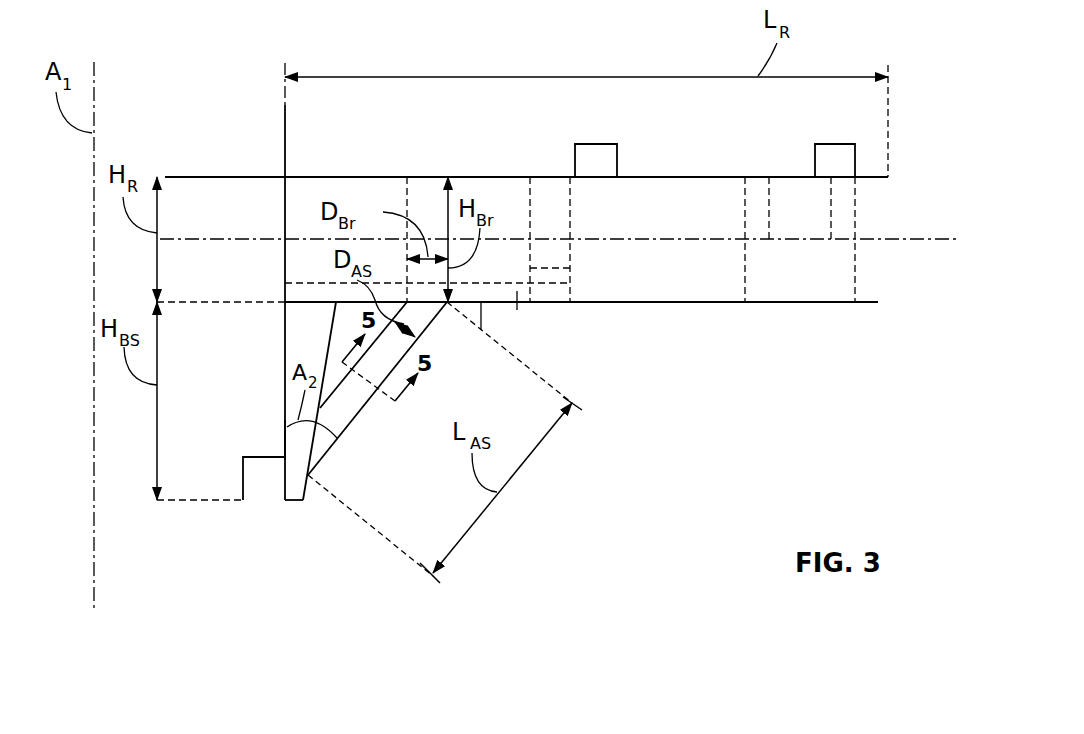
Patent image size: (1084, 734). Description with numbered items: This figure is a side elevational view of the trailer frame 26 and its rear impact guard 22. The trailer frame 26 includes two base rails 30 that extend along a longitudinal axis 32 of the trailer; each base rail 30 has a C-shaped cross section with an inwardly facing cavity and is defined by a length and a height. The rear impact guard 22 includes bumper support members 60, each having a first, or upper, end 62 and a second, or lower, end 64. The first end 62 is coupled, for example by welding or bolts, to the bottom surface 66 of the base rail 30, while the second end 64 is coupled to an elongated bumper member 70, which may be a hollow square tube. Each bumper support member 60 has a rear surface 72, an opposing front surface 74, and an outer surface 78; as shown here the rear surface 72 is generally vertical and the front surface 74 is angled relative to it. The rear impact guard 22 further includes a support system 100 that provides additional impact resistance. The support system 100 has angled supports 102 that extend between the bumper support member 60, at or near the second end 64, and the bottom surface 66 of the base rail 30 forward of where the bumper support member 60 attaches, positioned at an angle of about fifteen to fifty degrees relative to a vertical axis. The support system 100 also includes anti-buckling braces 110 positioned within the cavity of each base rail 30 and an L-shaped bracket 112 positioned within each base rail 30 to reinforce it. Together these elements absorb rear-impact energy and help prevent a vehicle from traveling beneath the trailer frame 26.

The rear impact guard 22 is at (244, 329).
The trailer frame 26 is at (637, 352).
The base rail 30 is at (347, 176).
The longitudinal axis 32 is at (950, 239).
The bumper support member 60 is at (290, 343).
The first end 62 is at (290, 306).
The second end 64 is at (296, 490).
The bottom surface 66 is at (481, 330).
The bumper member 70 is at (267, 485).
The rear surface 72 is at (285, 381).
The front surface 74 is at (325, 375).
The outer surface 78 is at (290, 437).
The support system 100 is at (425, 393).
The angled support 102 is at (337, 438).
The anti-buckling brace 110 is at (428, 190).
The L-shaped bracket 112 is at (517, 310).